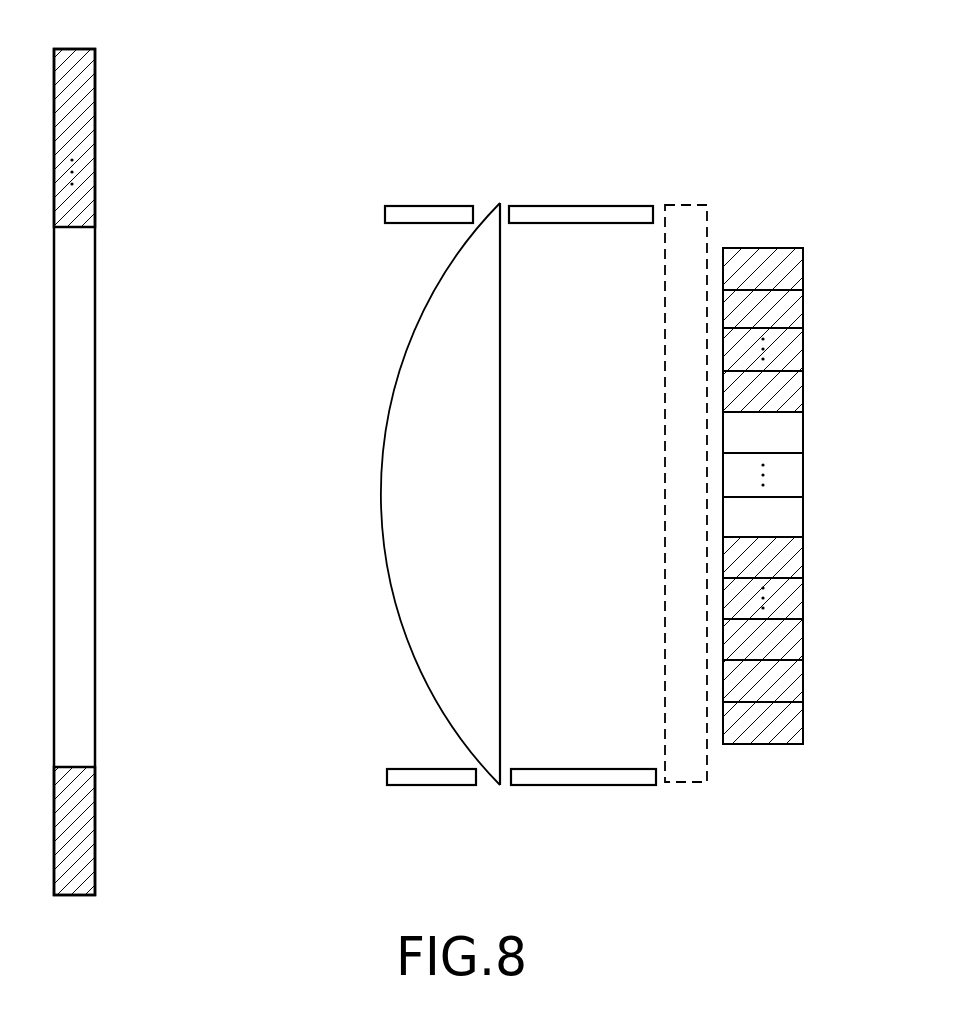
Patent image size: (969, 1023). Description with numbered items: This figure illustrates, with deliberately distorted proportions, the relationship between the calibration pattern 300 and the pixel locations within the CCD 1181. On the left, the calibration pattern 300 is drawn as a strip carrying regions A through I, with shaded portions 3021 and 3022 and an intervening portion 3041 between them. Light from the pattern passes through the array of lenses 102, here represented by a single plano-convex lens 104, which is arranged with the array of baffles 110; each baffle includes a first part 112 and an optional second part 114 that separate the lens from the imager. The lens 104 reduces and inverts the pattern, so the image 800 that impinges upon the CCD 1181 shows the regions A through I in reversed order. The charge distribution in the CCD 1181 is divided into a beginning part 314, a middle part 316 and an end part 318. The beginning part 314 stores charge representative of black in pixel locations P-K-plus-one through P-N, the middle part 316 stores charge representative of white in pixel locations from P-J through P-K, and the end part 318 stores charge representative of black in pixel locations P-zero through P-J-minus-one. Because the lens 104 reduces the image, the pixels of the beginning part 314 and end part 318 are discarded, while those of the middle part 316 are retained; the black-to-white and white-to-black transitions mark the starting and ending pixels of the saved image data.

The calibration pattern 300 is at (132, 472).
The first hatched data region 3021 is at (91, 121).
The second hatched data region 3022 is at (92, 847).
The unmodulated region 3041 is at (82, 310).
The array of baffles 110 is at (488, 394).
The array of lenses 102 is at (414, 435).
The plano-convex lens 104 is at (407, 590).
The second optional part of baffle 114 is at (410, 205).
The first part of baffle 112 is at (590, 210).
The image 800 is at (690, 195).
The CCD 1181 is at (813, 453).
The beginning part 314 is at (817, 248).
The middle part 316 is at (817, 412).
The end part 318 is at (817, 537).